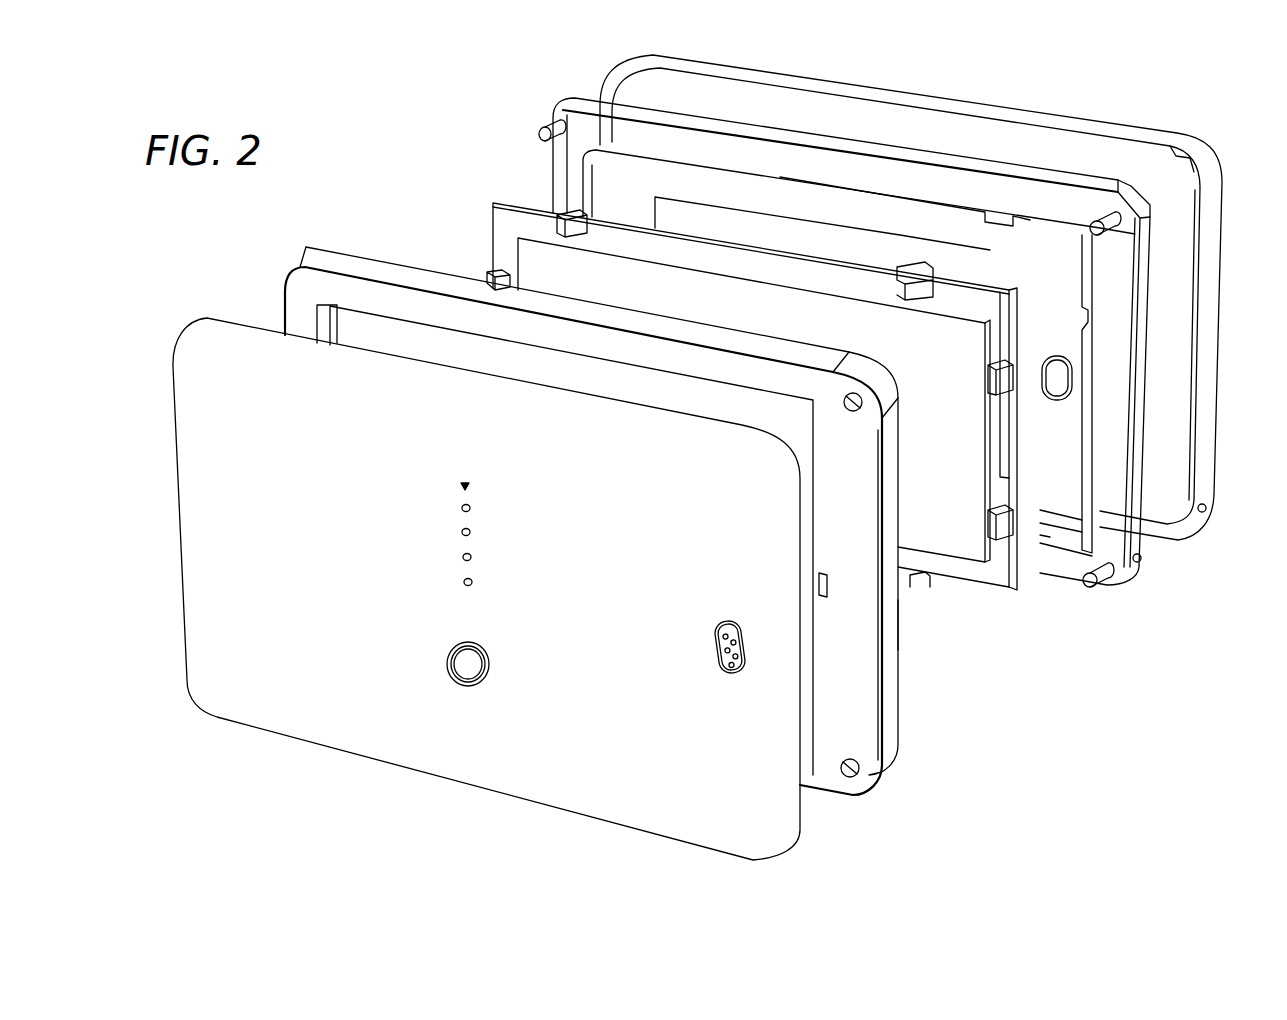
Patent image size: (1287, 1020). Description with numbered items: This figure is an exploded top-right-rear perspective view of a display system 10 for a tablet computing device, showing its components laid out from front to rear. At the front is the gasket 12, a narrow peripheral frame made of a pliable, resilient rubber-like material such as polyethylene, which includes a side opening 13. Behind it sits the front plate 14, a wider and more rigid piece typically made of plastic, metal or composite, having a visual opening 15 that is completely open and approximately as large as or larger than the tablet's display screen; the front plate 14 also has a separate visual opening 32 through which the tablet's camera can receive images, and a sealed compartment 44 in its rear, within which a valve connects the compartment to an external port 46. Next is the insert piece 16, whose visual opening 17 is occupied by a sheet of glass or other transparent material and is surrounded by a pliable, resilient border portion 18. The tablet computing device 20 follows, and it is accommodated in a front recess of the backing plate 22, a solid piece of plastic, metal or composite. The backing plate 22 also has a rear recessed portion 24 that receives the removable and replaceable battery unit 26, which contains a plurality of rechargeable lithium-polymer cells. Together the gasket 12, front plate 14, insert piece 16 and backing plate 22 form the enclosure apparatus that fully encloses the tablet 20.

The display system 10 is at (408, 152).
The gasket 12 is at (781, 77).
The side opening 13 is at (1206, 508).
The front plate 14 is at (565, 121).
The visual opening 15 is at (800, 237).
The insert piece 16 is at (947, 570).
The visual opening 17 is at (943, 352).
The border portion 18 is at (503, 224).
The tablet computing device 20 is at (907, 627).
The backing plate 22 is at (397, 277).
The rear recessed portion 24 is at (353, 325).
The battery unit 26 is at (253, 673).
The visual opening 32 is at (1072, 381).
The sealed compartment 44 is at (1050, 533).
The external port 46 is at (1141, 558).